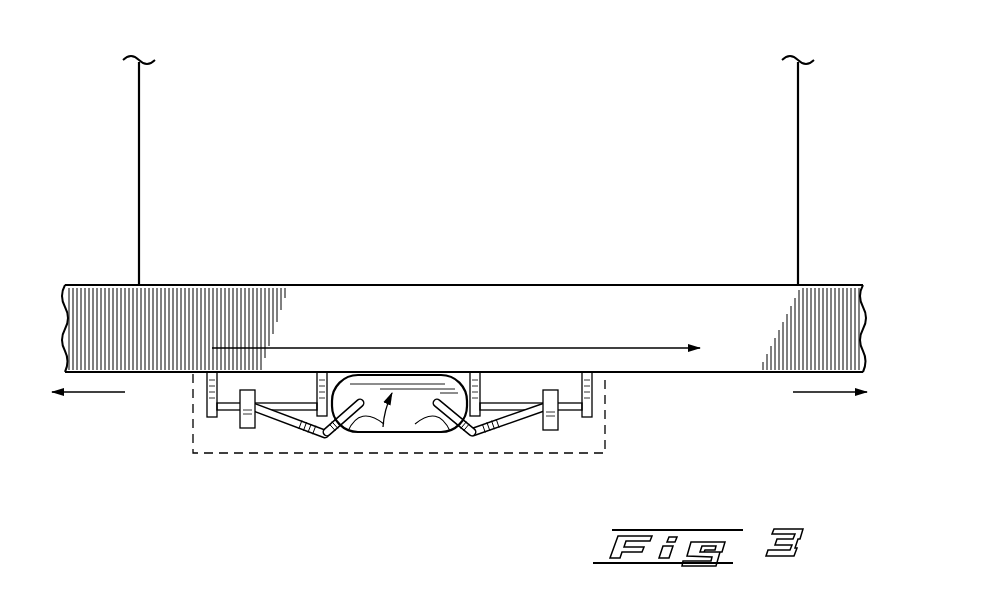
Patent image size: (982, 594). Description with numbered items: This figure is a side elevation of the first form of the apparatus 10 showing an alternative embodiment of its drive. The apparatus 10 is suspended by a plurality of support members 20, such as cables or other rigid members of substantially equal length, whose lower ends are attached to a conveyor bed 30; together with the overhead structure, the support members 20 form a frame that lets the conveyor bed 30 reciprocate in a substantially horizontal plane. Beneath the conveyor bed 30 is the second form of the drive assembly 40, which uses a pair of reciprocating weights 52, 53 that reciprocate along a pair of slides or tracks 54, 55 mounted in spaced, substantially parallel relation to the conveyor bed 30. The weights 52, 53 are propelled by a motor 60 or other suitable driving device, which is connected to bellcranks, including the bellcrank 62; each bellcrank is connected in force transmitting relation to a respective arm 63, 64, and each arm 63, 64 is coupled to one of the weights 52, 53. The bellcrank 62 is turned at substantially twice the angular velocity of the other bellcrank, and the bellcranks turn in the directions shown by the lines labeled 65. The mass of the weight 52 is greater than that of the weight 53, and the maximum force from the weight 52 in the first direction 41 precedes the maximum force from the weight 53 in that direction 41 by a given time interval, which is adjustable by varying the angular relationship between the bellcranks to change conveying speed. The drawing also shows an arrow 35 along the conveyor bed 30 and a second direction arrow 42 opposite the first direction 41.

The apparatus 10 is at (354, 170).
The support members 20 is at (140, 148).
The conveyor bed 30 is at (723, 317).
The direction of travel 35 is at (572, 348).
The drive assembly 40 is at (615, 417).
The first direction 41 is at (825, 393).
The leftward direction arrow 42 is at (90, 393).
The reciprocating weight 52 is at (560, 438).
The reciprocating weight 53 is at (243, 437).
The slide 54 is at (502, 401).
The slide 55 is at (293, 401).
The motor 60 is at (400, 437).
The bellcrank 62 is at (338, 441).
The arm 63 is at (503, 438).
The arm 64 is at (278, 438).
The lines indicating bellcrank rotation directions 65 is at (366, 434).